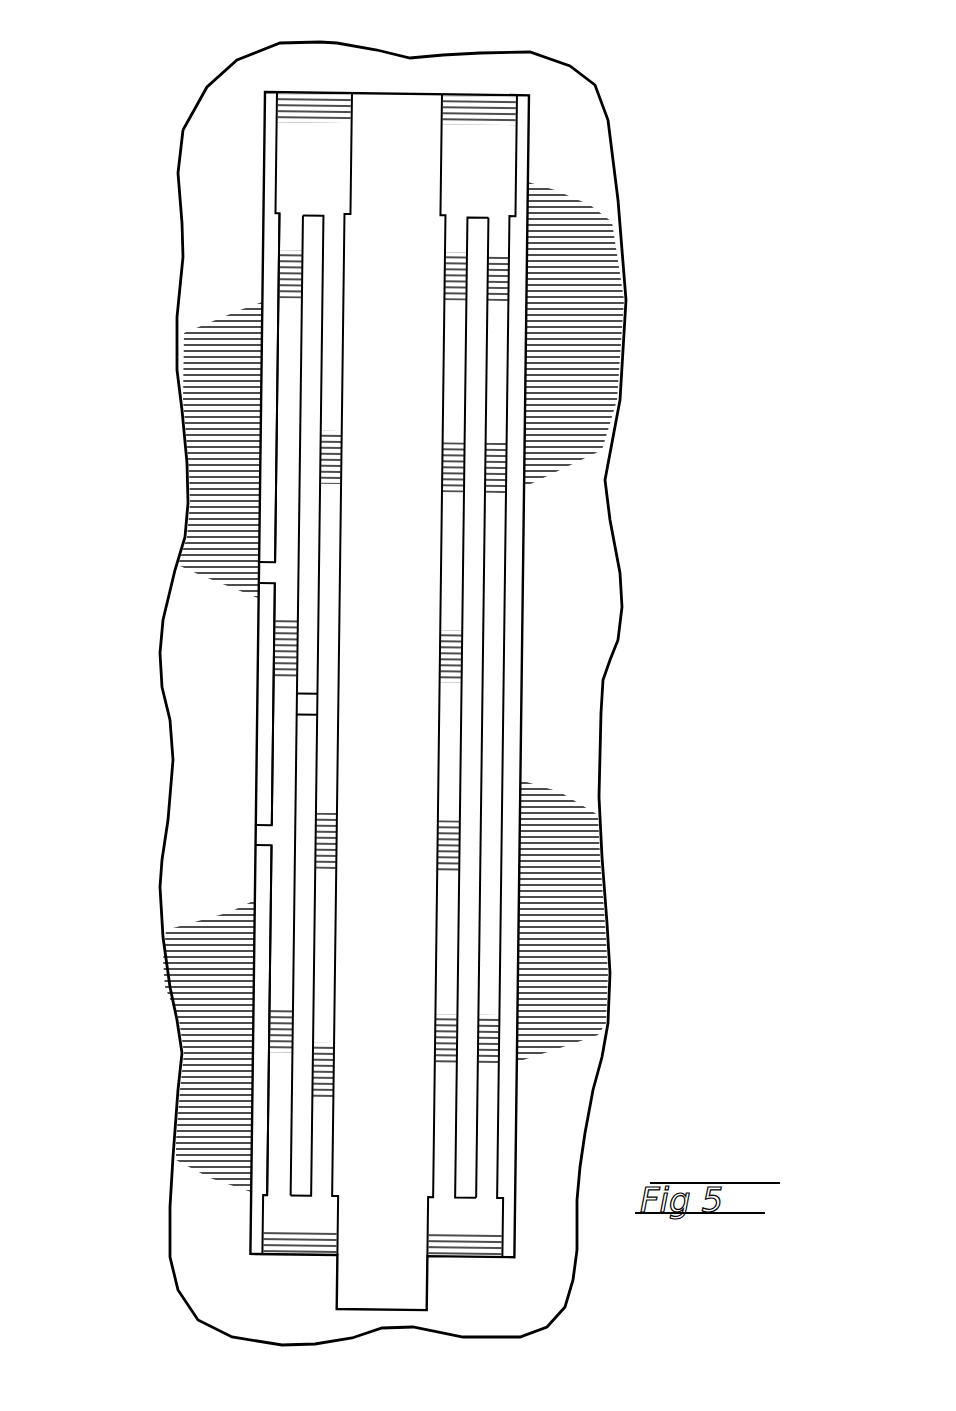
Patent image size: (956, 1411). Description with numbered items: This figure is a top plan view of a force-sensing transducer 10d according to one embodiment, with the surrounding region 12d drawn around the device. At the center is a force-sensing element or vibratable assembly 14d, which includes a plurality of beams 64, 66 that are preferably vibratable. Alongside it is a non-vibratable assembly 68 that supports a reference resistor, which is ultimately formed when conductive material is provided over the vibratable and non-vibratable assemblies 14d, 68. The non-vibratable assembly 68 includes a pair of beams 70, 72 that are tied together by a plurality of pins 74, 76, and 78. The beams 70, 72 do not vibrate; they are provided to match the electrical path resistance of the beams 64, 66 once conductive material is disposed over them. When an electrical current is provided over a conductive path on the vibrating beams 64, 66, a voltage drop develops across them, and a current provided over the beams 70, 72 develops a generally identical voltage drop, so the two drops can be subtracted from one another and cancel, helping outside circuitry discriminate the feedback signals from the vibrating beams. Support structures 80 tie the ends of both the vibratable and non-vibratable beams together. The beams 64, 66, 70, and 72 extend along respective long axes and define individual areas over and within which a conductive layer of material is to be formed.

The force-sensing transducer 10d is at (197, 43).
The substrate 12d is at (217, 152).
The vibratable assembly 14d is at (531, 706).
The beam 64 is at (456, 586).
The beam 66 is at (497, 541).
The non-vibratable assembly 68 is at (256, 271).
The beam 70 is at (290, 349).
The beam 72 is at (333, 394).
The pin 74 is at (271, 572).
The pin 76 is at (300, 710).
The pin 78 is at (266, 834).
The support structure 80 is at (331, 184).